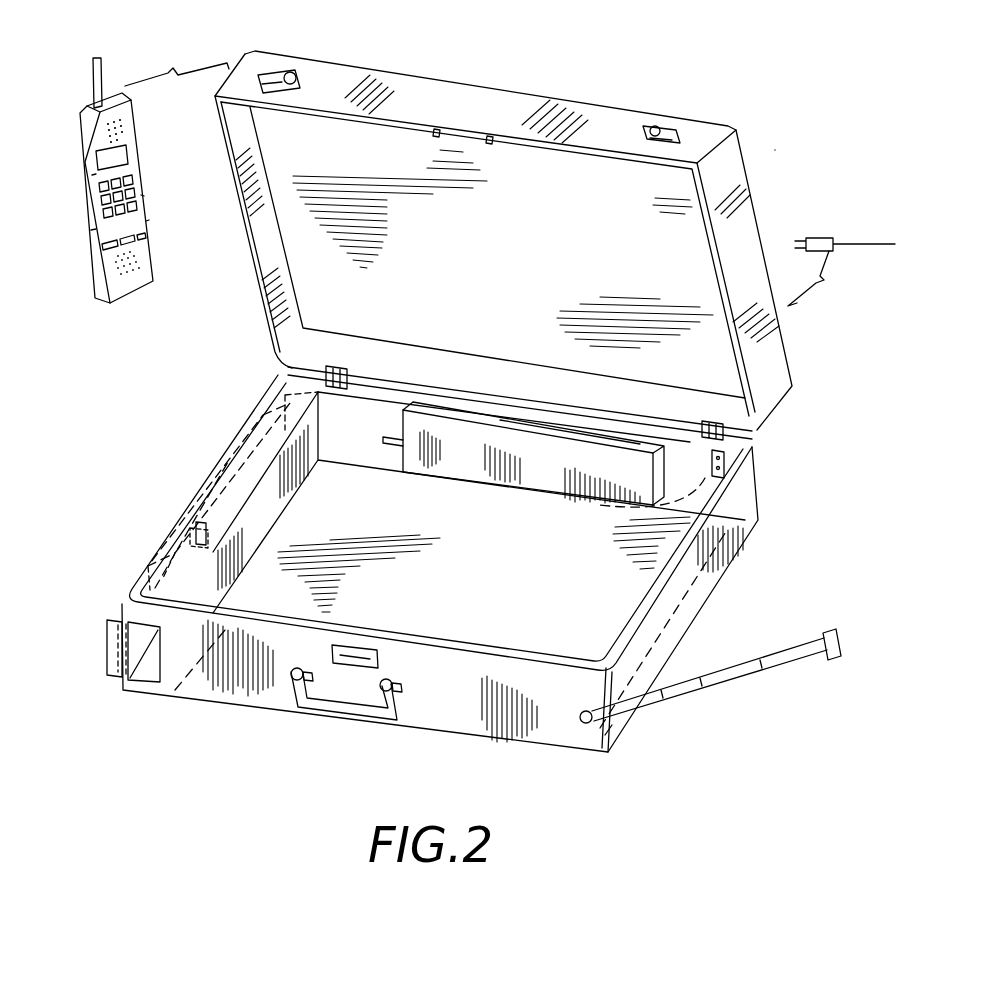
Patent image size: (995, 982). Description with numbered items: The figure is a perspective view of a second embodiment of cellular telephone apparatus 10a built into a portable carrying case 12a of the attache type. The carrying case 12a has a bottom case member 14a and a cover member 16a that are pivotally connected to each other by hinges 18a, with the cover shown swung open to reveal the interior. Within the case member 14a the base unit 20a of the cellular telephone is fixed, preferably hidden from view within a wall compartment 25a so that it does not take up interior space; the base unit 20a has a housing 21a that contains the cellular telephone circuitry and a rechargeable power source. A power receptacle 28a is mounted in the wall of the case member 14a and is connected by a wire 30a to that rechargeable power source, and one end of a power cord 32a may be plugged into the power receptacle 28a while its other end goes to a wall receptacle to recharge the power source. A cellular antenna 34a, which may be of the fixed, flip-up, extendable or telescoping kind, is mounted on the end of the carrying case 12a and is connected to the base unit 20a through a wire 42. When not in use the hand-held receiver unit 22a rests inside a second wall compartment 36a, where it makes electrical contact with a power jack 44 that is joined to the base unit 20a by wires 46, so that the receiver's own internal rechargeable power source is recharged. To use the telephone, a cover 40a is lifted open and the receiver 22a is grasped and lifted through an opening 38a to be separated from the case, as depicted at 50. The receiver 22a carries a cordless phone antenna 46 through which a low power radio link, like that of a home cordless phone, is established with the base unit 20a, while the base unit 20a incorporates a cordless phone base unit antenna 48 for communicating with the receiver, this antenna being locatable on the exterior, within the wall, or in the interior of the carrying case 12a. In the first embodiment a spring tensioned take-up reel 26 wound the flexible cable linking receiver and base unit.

The cellular telephone apparatus 10a is at (775, 247).
The portable carrying case 12a is at (762, 439).
The bottom case member 14a is at (614, 752).
The cover member 16a is at (490, 102).
The hinges 18a is at (345, 368).
The base unit 20a is at (420, 479).
The housing 21a is at (482, 472).
The hand-held receiver unit 22a is at (160, 577).
The wall compartment 25a is at (302, 388).
The spring tensioned take-up reel 26 is at (563, 404).
The power receptacle 28a is at (665, 463).
The wire 30a is at (695, 478).
The power cord 32a is at (844, 245).
The cellular antenna 34a is at (748, 683).
The wall compartment 36a is at (240, 449).
The opening 38a is at (146, 675).
The cover 40a is at (104, 674).
The wire 42 is at (694, 587).
The power jack 44 is at (198, 528).
The wires 46 is at (103, 72).
The cordless phone base unit antenna 48 is at (389, 452).
The receiver separated from carrying case 50 is at (93, 298).